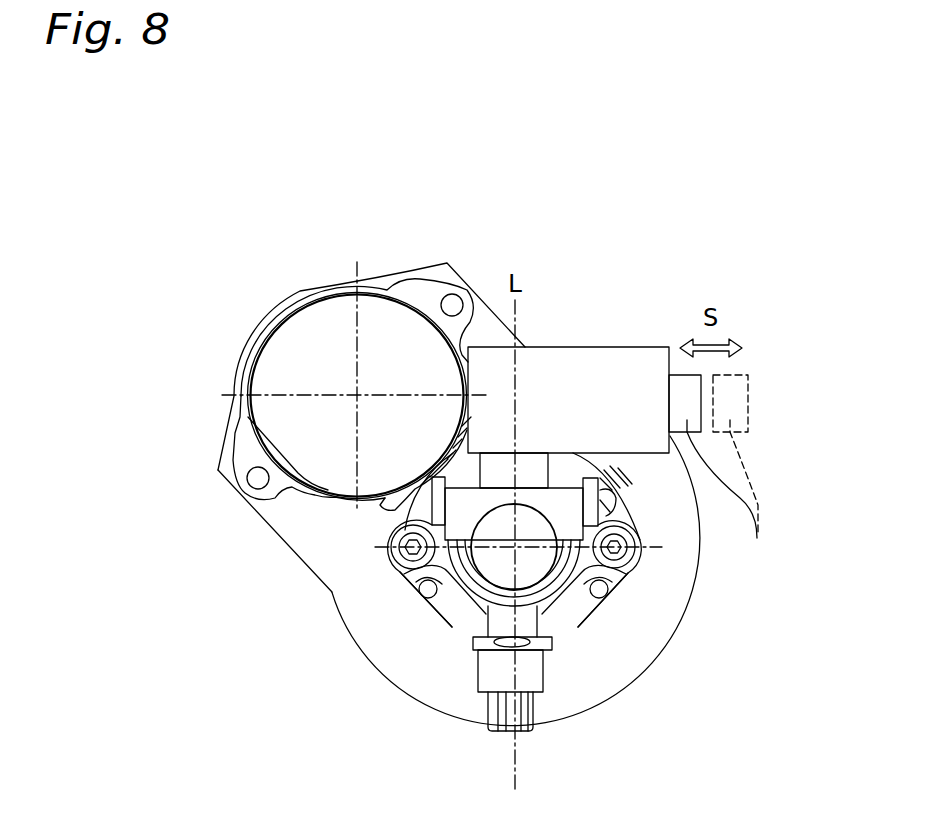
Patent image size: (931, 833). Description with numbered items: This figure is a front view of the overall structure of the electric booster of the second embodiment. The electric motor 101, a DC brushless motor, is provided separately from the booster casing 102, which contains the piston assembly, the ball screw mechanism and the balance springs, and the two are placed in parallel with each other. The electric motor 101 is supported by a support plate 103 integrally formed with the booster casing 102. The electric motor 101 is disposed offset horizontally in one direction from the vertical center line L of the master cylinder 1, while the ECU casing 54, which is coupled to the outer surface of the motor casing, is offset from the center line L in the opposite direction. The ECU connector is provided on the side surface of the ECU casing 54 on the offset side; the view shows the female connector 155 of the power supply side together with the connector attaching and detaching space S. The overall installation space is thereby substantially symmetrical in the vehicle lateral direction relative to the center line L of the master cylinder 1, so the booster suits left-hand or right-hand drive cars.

The master cylinder 1 is at (547, 588).
The ECU casing 54 is at (602, 363).
The electric motor 101 is at (278, 310).
The booster casing 102 is at (440, 627).
The support plate 103 is at (353, 587).
The female connector 155 is at (730, 495).